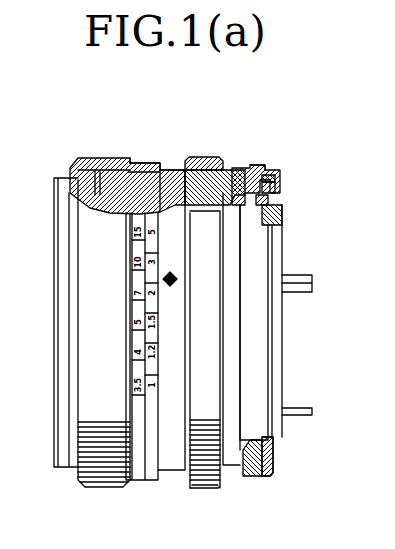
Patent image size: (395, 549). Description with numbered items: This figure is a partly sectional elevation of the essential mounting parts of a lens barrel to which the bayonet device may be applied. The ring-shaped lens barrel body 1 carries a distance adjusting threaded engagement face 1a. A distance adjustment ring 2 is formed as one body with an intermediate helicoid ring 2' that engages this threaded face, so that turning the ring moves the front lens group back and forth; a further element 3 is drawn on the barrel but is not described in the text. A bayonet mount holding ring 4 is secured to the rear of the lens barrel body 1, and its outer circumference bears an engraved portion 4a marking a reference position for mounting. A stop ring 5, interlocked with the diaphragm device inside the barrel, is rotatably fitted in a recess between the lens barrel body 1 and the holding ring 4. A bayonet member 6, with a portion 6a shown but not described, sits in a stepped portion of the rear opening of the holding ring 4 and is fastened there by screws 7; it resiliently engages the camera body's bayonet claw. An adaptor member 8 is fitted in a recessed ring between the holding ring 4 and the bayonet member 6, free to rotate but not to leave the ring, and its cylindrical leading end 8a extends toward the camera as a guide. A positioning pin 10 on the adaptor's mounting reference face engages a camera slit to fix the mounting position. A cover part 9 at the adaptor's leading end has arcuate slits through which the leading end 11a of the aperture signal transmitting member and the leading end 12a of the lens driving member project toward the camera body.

The lens barrel body 1 is at (166, 168).
The distance adjusting threaded engagement face 1a is at (140, 165).
The distance adjustment ring 2 is at (78, 317).
The intermediate helicoid ring 2' is at (127, 167).
The helicoid ring 3 is at (120, 213).
The bayonet mount holding ring 4 is at (232, 168).
The engraved portion 4a is at (257, 166).
The stop ring 5 is at (204, 158).
The bayonet member 6 is at (276, 188).
The bent portion of spring member 6a is at (272, 180).
The screws 7 is at (256, 478).
The adaptor member 8 is at (258, 228).
The leading end of adaptor 8a is at (278, 438).
The cover part 9 is at (281, 222).
The positioning pin 10 is at (268, 200).
The leading end of aperture signal transmitting member 11a is at (308, 282).
The leading end of lens driving member 12a is at (304, 410).